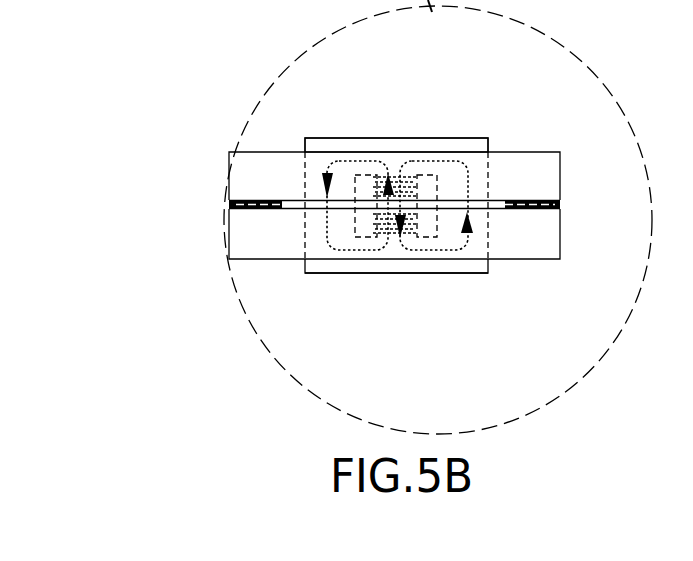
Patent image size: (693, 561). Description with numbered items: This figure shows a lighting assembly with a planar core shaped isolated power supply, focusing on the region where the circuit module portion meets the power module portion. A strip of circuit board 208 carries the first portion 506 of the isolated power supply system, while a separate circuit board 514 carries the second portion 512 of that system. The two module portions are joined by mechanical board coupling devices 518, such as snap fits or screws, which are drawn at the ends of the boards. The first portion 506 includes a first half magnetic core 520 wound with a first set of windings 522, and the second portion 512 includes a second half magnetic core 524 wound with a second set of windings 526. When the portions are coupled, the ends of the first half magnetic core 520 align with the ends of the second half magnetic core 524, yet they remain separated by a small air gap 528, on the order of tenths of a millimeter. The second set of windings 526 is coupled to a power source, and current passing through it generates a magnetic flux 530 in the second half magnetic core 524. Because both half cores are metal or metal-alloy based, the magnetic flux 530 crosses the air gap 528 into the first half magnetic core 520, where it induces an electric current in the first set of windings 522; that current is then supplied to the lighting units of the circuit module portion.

The first portion of the isolated power supply system 506 is at (452, 118).
The first half magnetic core 520 is at (317, 140).
The second half magnetic core 524 is at (310, 264).
The circuit board 208 is at (533, 181).
The circuit board 514 is at (543, 245).
The mechanical board coupling devices 518 is at (227, 200).
The first set of windings 522 is at (373, 183).
The second set of windings 526 is at (375, 232).
The magnetic flux 530 is at (327, 173).
The air gap 528 is at (486, 192).
The second portion of the isolated power supply system 512 is at (508, 298).